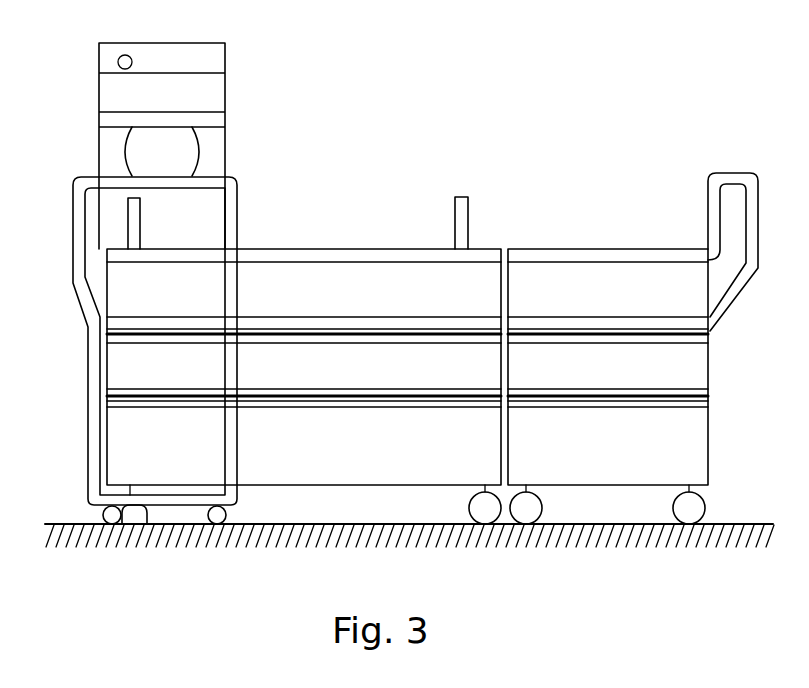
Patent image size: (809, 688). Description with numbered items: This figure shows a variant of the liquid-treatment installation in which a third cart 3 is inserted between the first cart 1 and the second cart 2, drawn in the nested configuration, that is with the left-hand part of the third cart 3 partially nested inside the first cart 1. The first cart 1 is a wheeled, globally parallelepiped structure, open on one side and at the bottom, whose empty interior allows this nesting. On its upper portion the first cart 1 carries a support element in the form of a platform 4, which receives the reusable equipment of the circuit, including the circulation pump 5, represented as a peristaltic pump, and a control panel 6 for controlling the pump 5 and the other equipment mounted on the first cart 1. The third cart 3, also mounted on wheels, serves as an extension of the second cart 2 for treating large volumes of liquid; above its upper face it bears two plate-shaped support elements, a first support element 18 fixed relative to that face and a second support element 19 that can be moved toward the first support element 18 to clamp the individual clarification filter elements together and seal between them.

The first cart 1 is at (158, 146).
The second cart 2 is at (697, 368).
The third cart 3 is at (343, 270).
The platform 4 is at (227, 183).
The circulation pump 5 is at (185, 148).
The control panel 6 is at (213, 96).
The first support element 18 is at (137, 217).
The second support element 19 is at (462, 216).